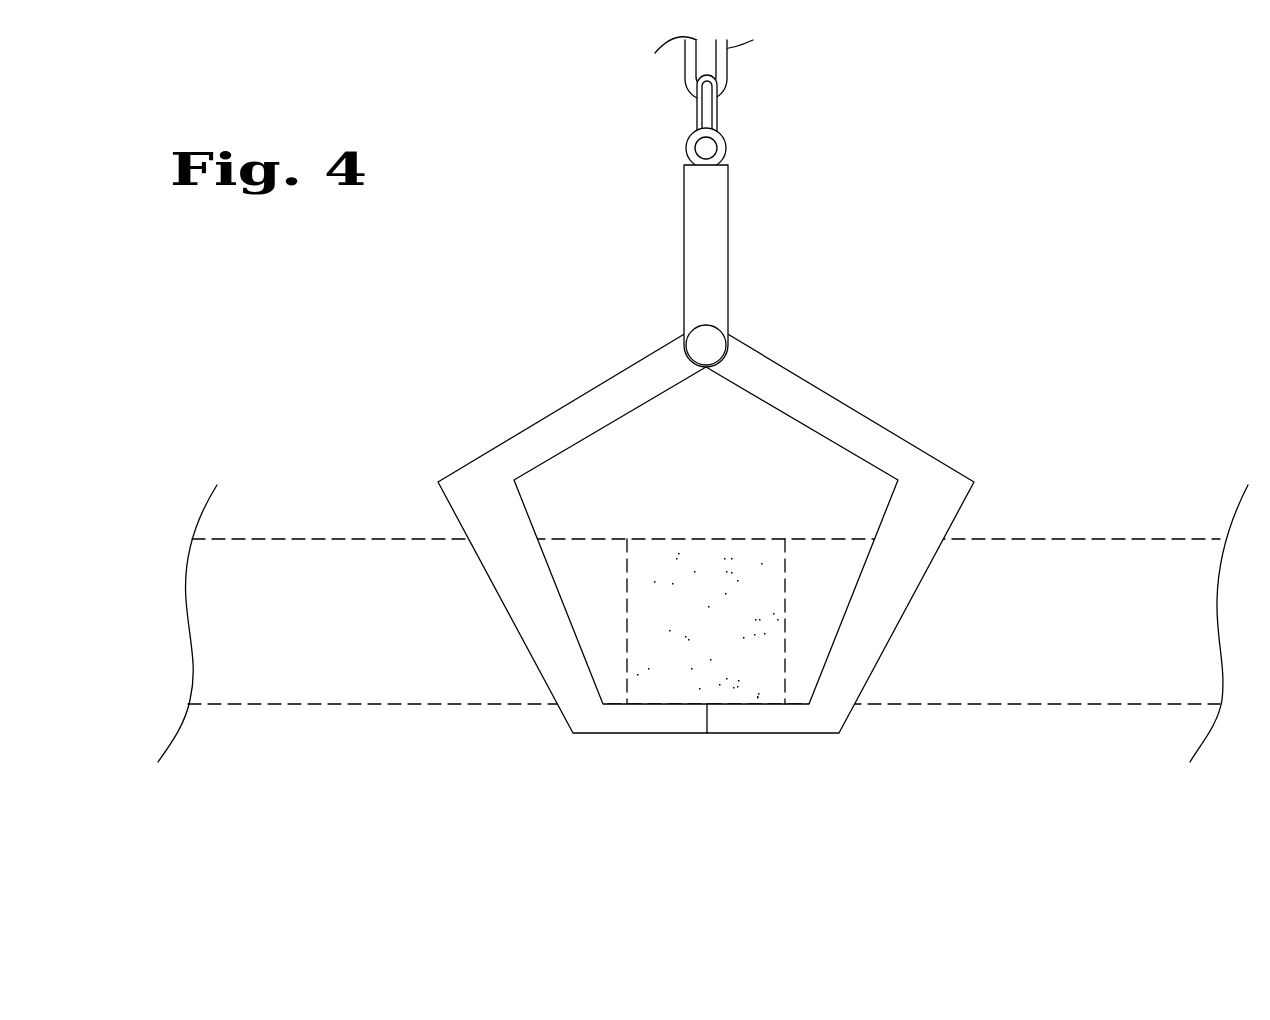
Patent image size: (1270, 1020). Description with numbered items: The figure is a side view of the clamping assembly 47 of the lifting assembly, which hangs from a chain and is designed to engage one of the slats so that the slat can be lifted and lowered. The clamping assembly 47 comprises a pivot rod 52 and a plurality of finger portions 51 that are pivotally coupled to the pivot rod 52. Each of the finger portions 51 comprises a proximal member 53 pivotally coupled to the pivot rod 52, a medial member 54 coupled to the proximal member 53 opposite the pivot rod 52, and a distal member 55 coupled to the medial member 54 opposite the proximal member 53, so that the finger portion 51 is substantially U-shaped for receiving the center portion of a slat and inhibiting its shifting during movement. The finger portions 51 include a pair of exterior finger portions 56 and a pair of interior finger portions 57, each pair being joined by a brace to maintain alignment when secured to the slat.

The clamping assembly 47 is at (928, 328).
The finger portions 51 is at (438, 482).
The pivot rod 52 is at (697, 345).
The proximal member 53 is at (600, 400).
The medial member 54 is at (532, 620).
The distal member 55 is at (667, 723).
The exterior finger portions 56 is at (483, 527).
The interior finger portions 57 is at (877, 615).